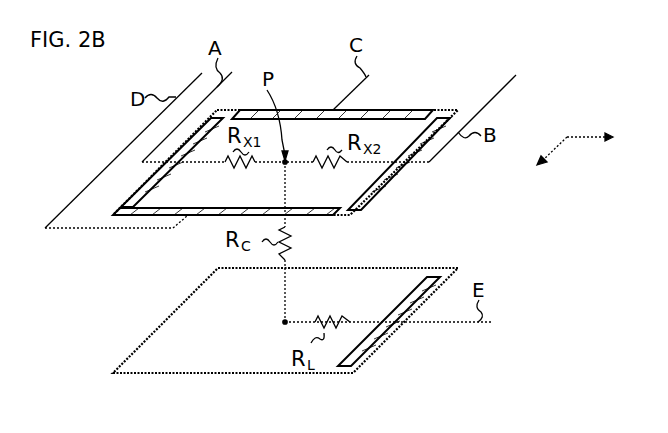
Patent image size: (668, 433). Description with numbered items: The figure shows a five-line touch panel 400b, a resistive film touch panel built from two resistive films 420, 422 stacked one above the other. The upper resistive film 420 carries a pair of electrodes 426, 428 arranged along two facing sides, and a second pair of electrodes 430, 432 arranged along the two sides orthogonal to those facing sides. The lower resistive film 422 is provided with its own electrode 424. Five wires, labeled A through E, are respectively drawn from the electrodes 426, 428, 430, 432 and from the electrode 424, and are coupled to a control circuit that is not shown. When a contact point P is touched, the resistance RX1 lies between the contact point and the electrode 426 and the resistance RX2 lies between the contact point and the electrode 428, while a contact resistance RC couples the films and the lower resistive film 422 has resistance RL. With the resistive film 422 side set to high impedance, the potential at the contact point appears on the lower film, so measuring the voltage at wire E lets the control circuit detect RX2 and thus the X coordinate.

The five-line touch panel 400b is at (558, 104).
The resistive film 420 is at (301, 130).
The resistive film 422 is at (187, 313).
The electrode 424 is at (390, 334).
The electrode 426 is at (168, 175).
The electrode 428 is at (398, 175).
The electrode 430 is at (411, 110).
The electrode 432 is at (312, 220).